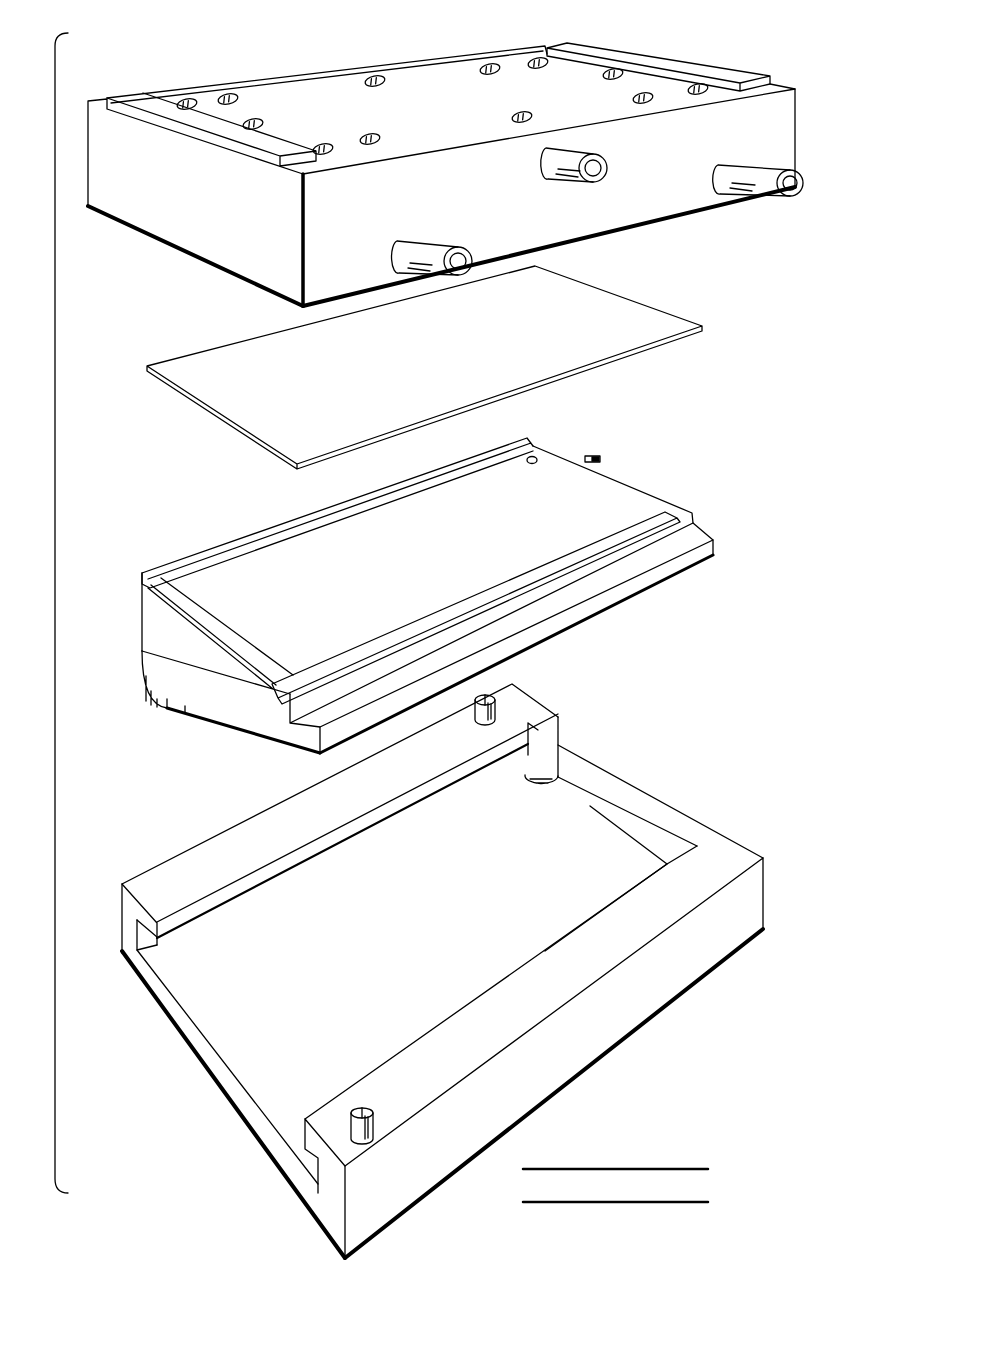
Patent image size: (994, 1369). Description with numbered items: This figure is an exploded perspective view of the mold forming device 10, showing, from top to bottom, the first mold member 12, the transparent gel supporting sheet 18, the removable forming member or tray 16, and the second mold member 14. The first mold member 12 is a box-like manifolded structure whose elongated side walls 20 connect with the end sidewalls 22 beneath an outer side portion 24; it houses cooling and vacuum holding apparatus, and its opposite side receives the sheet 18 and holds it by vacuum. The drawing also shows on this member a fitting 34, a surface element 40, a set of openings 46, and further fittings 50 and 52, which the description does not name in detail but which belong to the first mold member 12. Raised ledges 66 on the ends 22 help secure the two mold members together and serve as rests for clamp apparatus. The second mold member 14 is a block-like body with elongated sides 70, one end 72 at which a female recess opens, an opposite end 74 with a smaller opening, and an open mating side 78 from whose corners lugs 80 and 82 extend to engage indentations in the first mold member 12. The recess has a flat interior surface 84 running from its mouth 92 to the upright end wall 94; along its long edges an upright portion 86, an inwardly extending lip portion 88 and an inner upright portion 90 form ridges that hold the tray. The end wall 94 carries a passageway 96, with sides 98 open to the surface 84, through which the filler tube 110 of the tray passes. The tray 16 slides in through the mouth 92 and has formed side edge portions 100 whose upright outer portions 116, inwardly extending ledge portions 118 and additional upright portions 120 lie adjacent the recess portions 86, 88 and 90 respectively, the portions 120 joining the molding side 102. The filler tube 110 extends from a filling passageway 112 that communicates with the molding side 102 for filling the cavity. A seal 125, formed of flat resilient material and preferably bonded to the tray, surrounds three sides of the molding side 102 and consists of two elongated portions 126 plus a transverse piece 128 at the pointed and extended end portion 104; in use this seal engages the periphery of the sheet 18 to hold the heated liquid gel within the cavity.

The mold forming device 10 is at (28, 28).
The first mold member 12 is at (146, 68).
The second mold member 14 is at (418, 971).
The forming member or tray 16 is at (445, 589).
The gel supporting sheet 18 is at (182, 336).
The elongated side walls 20 is at (608, 218).
The end sidewalls 22 is at (190, 235).
The outer side portion 24 is at (300, 84).
The tubular sleeve 34 is at (585, 152).
The plate 40 is at (634, 312).
The holes 46 is at (528, 54).
The tubular sleeve 50 is at (730, 195).
The tubular sleeve 52 is at (430, 232).
The raised ledges 66 is at (156, 100).
The elongated sides 70 is at (534, 1058).
The end having the recess opening 72 is at (297, 1217).
The opposite end 74 is at (367, 818).
The open side 78 is at (660, 801).
The lug 80 is at (461, 724).
The lug 82 is at (383, 1111).
The flat interior surface 84 is at (233, 1104).
The upright portion 86 is at (190, 1057).
The inwardly extending lip portion 88 is at (217, 1046).
The inner upright portion 90 is at (286, 1042).
The mouth of the recess 92 is at (215, 1067).
The upright end wall 94 is at (621, 876).
The passageway 96 is at (604, 716).
The sides of the passageway 98 is at (518, 778).
The formed side edge portions 100 is at (445, 589).
The molding side 102 is at (427, 548).
The pointed and extended end portion 104 is at (201, 678).
The filler tube 110 is at (613, 444).
The filling passageway 112 is at (539, 478).
The upright outer portions 116 is at (516, 654).
The inwardly extending ledge portions 118 is at (516, 633).
The additional upright portions 120 is at (502, 638).
The seal 125 is at (234, 503).
The elongated seal portions 126 is at (411, 571).
The transverse seal piece 128 is at (219, 636).